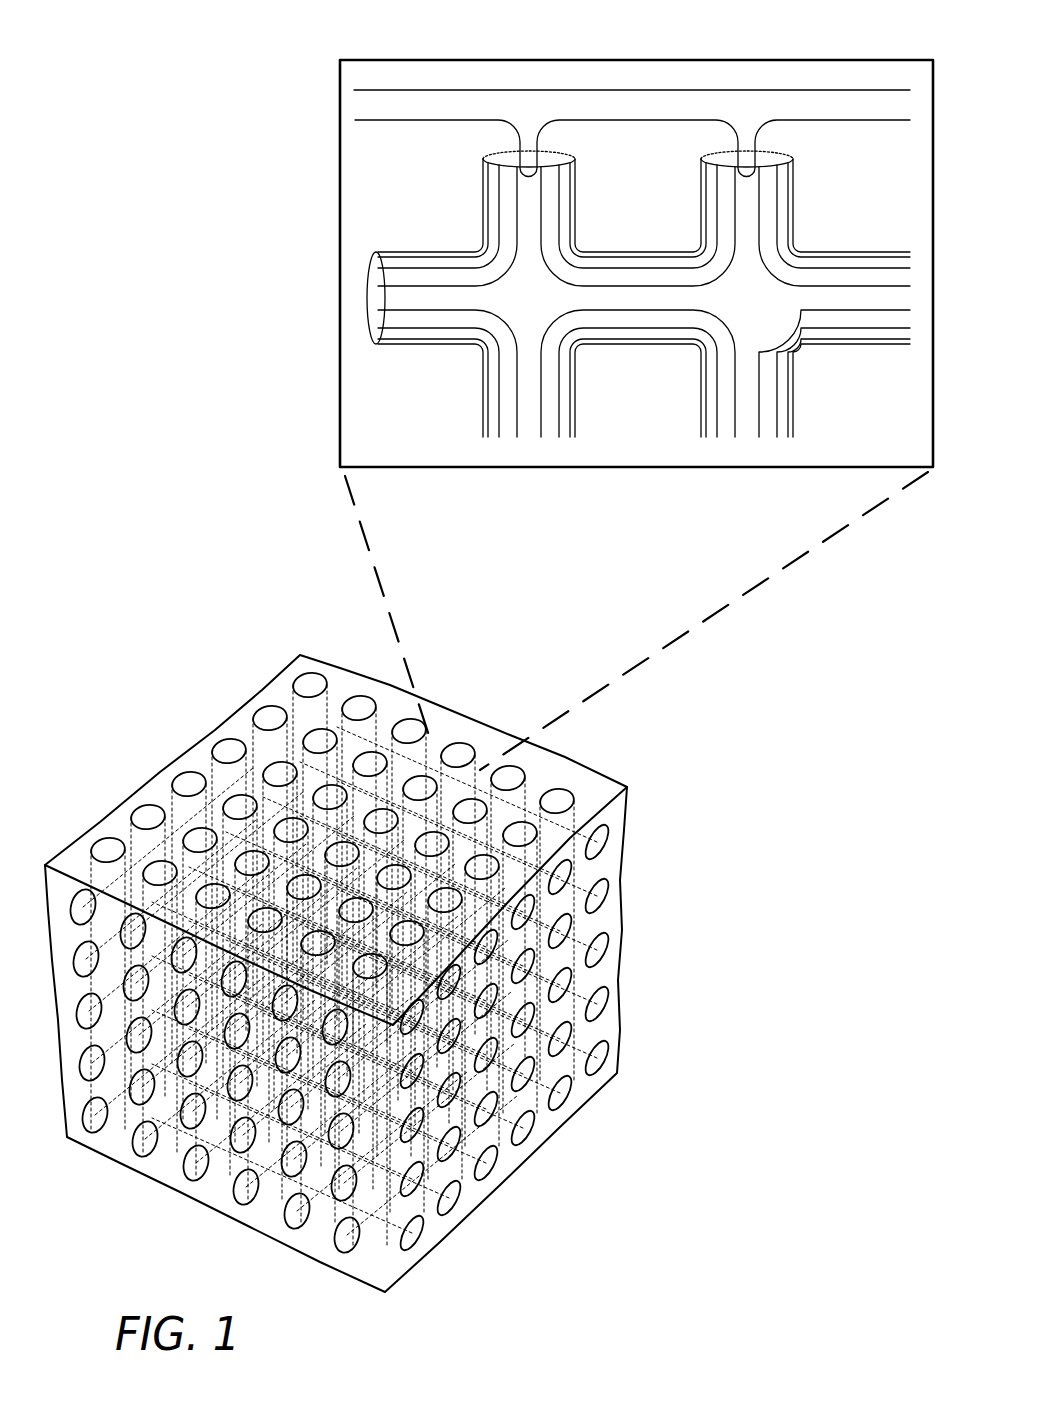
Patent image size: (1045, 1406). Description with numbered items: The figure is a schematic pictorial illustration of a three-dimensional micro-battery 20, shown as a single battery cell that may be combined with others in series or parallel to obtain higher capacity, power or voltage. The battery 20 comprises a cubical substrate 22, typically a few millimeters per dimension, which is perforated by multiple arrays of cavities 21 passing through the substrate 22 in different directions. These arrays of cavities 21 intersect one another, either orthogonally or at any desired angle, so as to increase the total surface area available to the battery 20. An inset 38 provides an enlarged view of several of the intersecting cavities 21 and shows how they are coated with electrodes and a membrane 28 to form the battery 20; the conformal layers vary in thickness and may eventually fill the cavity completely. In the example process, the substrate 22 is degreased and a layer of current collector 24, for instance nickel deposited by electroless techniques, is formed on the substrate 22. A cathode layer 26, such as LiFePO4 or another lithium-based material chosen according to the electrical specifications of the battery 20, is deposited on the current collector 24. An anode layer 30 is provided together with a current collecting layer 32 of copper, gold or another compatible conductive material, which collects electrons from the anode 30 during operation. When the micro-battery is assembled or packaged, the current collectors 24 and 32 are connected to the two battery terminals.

The three-dimensional micro-battery 20 is at (114, 542).
The cavities 21 is at (485, 148).
The cubical substrate 22 is at (307, 650).
The current collector 24 is at (453, 256).
The cathode layer 26 is at (427, 267).
The membrane 28 is at (397, 278).
The anode layer 30 is at (585, 300).
The current collecting layer 32 is at (897, 100).
The inset 38 is at (316, 76).